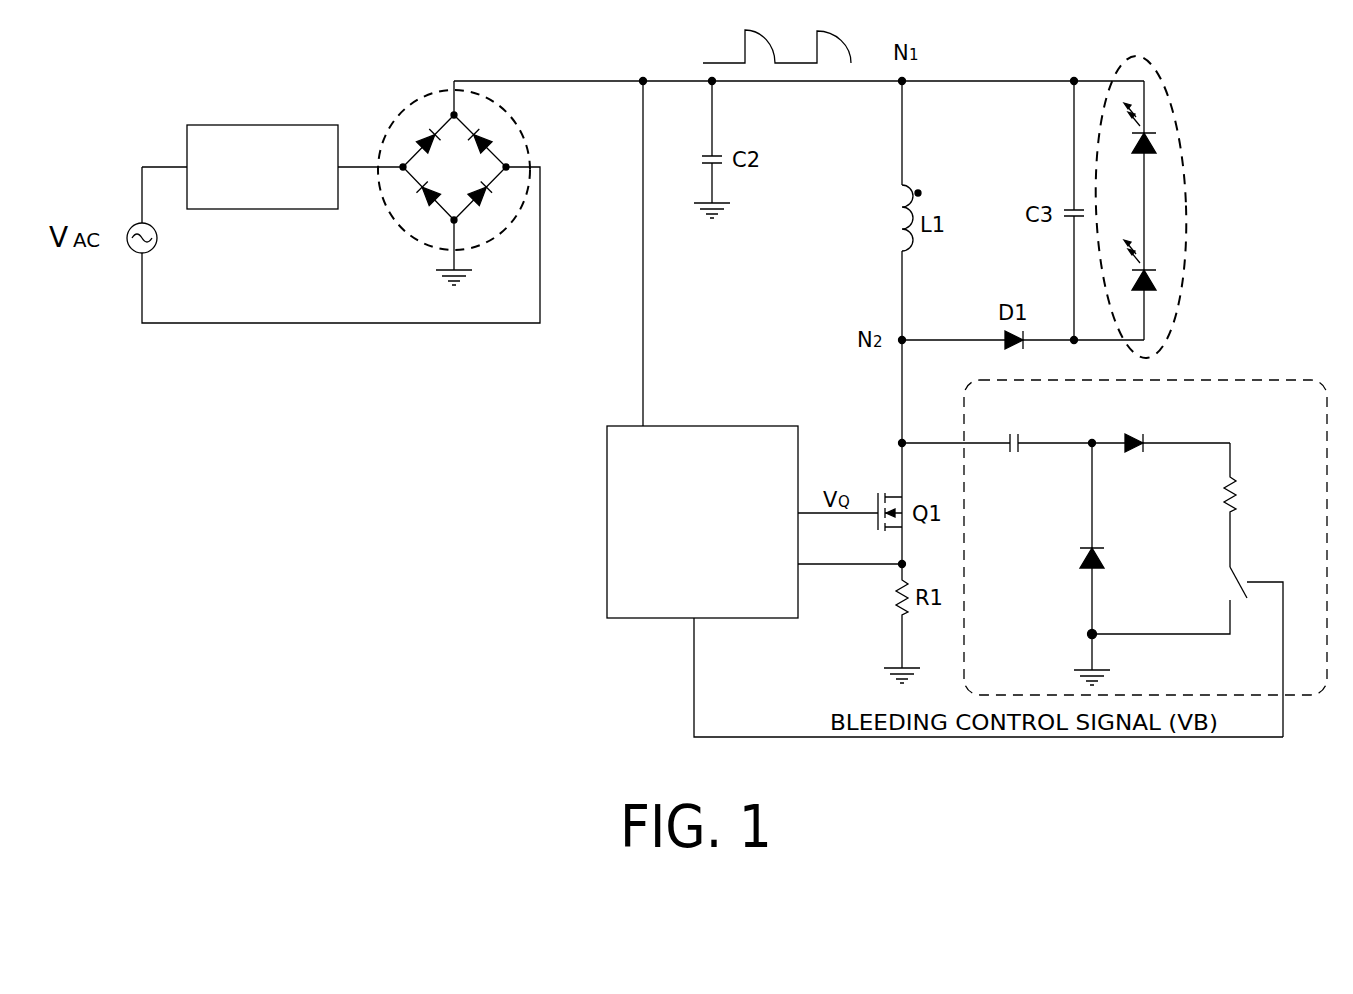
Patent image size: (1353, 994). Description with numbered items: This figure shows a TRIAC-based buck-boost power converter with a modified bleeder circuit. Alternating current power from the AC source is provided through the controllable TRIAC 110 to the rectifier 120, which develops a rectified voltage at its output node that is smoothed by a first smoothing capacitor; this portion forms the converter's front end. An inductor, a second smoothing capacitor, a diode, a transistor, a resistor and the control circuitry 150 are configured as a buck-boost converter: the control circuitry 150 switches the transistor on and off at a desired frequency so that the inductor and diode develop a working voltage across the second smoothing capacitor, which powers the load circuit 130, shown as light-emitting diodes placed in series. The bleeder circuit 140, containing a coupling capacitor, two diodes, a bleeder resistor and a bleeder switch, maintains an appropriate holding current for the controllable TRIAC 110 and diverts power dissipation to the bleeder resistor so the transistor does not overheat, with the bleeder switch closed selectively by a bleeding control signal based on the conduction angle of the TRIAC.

The controllable TRIAC 110 is at (283, 196).
The rectifier 120 is at (410, 101).
The load circuit 130 is at (1132, 56).
The bleeder circuit 140 is at (1258, 372).
The control circuitry 150 is at (722, 566).